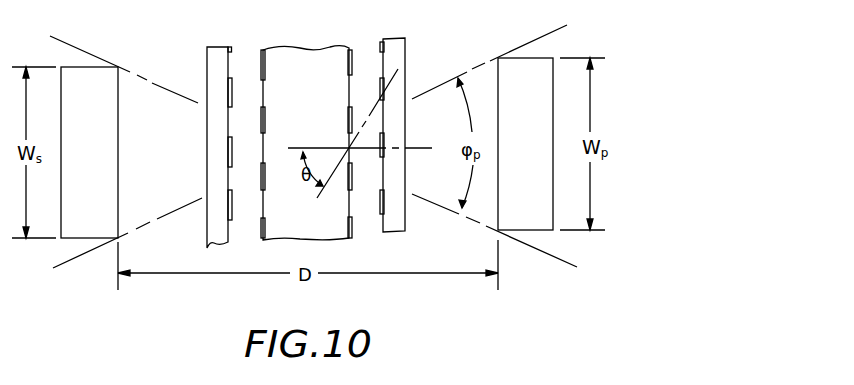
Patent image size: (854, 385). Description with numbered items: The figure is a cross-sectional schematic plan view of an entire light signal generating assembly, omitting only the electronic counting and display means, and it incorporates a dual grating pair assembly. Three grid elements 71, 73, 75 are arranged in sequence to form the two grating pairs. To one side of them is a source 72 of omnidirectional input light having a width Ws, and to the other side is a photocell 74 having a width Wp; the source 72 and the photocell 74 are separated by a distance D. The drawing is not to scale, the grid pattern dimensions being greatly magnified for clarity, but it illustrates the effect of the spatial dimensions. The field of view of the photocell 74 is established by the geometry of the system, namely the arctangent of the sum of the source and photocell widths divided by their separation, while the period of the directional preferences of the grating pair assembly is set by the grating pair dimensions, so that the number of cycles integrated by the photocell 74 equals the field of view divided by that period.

The grid element 71 is at (215, 47).
The source of omnidirectional input light 72 is at (99, 217).
The grid element 73 is at (300, 48).
The photocell 74 is at (537, 211).
The grid element 75 is at (392, 38).